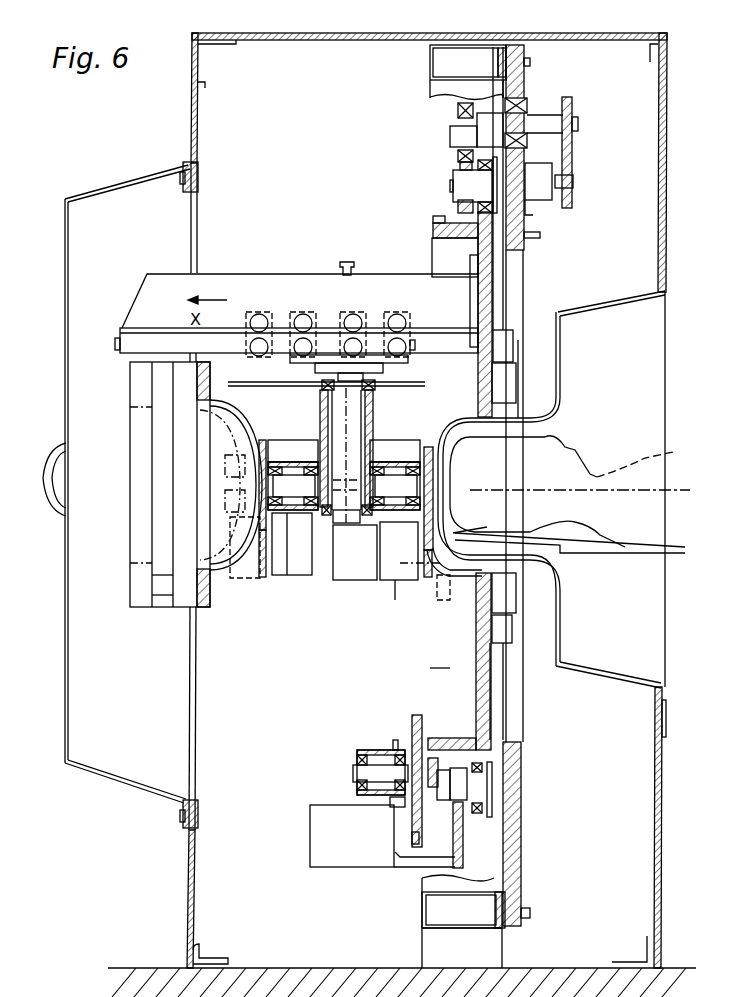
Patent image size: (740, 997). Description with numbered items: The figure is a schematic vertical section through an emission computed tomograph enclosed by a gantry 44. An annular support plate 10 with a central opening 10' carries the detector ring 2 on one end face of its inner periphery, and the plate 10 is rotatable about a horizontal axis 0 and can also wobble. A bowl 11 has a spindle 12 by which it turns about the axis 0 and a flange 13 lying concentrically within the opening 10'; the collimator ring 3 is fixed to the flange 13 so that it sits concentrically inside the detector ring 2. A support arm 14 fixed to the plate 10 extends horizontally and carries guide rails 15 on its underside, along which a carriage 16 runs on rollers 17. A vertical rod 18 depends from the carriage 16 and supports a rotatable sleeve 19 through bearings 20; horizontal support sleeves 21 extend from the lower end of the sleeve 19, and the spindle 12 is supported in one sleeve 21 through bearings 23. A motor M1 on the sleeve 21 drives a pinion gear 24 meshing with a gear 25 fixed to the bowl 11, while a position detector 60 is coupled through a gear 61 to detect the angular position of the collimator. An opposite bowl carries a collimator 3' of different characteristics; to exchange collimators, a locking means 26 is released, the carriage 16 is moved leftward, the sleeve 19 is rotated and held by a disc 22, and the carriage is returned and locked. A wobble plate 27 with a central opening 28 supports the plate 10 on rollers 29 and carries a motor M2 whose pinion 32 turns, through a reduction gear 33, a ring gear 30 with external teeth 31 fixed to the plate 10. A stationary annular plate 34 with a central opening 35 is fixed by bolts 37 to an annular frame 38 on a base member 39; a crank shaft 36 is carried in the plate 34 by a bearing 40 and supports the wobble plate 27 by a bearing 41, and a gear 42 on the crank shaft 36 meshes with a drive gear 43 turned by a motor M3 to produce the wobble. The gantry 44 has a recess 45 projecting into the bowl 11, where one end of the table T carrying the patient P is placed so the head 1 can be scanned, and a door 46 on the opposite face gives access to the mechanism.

The horizontal axis 0 is at (672, 490).
The head 1 is at (500, 474).
The detector ring 2 is at (512, 322).
The collimator ring 3 is at (510, 566).
The collimator 3' is at (196, 513).
The annular support plate 10 is at (515, 232).
The central opening 10' is at (524, 344).
The bowl 11 is at (235, 570).
The spindle 12 is at (297, 485).
The flange 13 is at (494, 384).
The support arm 14 is at (245, 290).
The guide rails 15 is at (175, 327).
The carriage 16 is at (340, 360).
The rollers 17 is at (303, 318).
The vertical rod 18 is at (348, 523).
The rotatable sleeve 19 is at (378, 388).
The bearings 20 is at (320, 392).
The horizontal support sleeves 21 is at (280, 445).
The disc 22 is at (280, 380).
The bearings 23 is at (300, 560).
The pinion gear 24 is at (410, 560).
The gear 25 is at (418, 540).
The locking means 26 is at (348, 250).
The wobble plate 27 is at (455, 162).
The central opening 28 is at (458, 208).
The rollers 29 is at (462, 185).
The ring gear 30 is at (432, 258).
The external teeth 31 is at (433, 216).
The pinion 32 is at (420, 838).
The reduction gear 33 is at (420, 818).
The stationary annular plate 34 is at (525, 78).
The central opening 35 is at (540, 236).
The crank shafts 36 is at (545, 118).
The bolts 37 is at (531, 912).
The annular frame 38 is at (430, 52).
The base member 39 is at (482, 950).
The bearing 40 is at (528, 100).
The bearing 41 is at (455, 115).
The gear 42 is at (575, 102).
The drive gear 43 is at (574, 160).
The gantry 44 is at (662, 852).
The recess 45 is at (642, 388).
The door 46 is at (65, 738).
The position detector 60 is at (285, 585).
The gear 61 is at (265, 590).
The motor M1 is at (300, 560).
The motor M2 is at (350, 860).
The motor M3 is at (545, 190).
The patient P is at (622, 466).
The table T is at (612, 553).